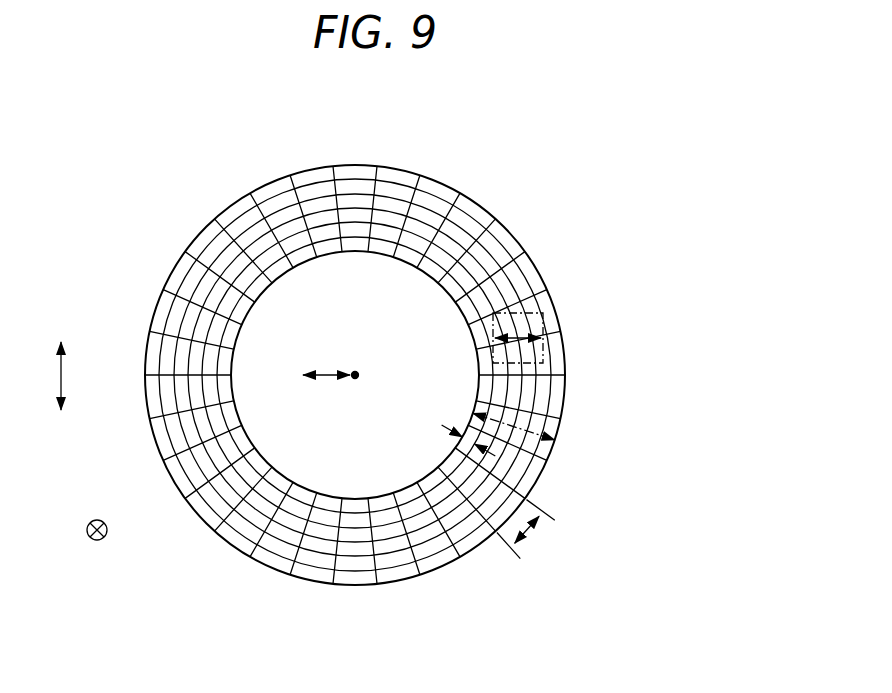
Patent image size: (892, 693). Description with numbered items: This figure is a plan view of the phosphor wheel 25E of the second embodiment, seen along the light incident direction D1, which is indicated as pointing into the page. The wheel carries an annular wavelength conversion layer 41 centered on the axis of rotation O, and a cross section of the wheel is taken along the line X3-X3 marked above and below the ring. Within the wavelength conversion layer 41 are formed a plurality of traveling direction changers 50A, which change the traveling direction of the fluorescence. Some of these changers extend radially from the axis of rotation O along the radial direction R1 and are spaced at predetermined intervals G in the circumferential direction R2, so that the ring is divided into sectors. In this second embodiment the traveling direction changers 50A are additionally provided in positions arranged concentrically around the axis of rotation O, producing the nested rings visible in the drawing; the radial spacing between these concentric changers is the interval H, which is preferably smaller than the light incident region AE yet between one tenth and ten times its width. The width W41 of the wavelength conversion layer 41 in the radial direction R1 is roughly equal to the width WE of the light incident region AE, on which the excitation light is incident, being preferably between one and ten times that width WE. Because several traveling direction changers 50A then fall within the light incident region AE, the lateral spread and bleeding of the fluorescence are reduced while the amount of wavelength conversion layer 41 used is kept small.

The phosphor wheel 25E is at (358, 339).
The wavelength conversion layer 41 is at (507, 242).
The traveling direction changers 50A is at (417, 180).
The line X3- X3 is at (355, 142).
The width of the light incident region WE is at (523, 334).
The light incident region AE is at (545, 352).
The width of the wavelength conversion layer W41 is at (520, 412).
The interval between concentrically arranged traveling direction changers H is at (457, 446).
The predetermined intervals G is at (526, 531).
The radial direction R1 is at (326, 356).
The circumferential direction R2 is at (40, 376).
The axis of rotation O is at (357, 376).
The light incident direction D1 is at (81, 531).